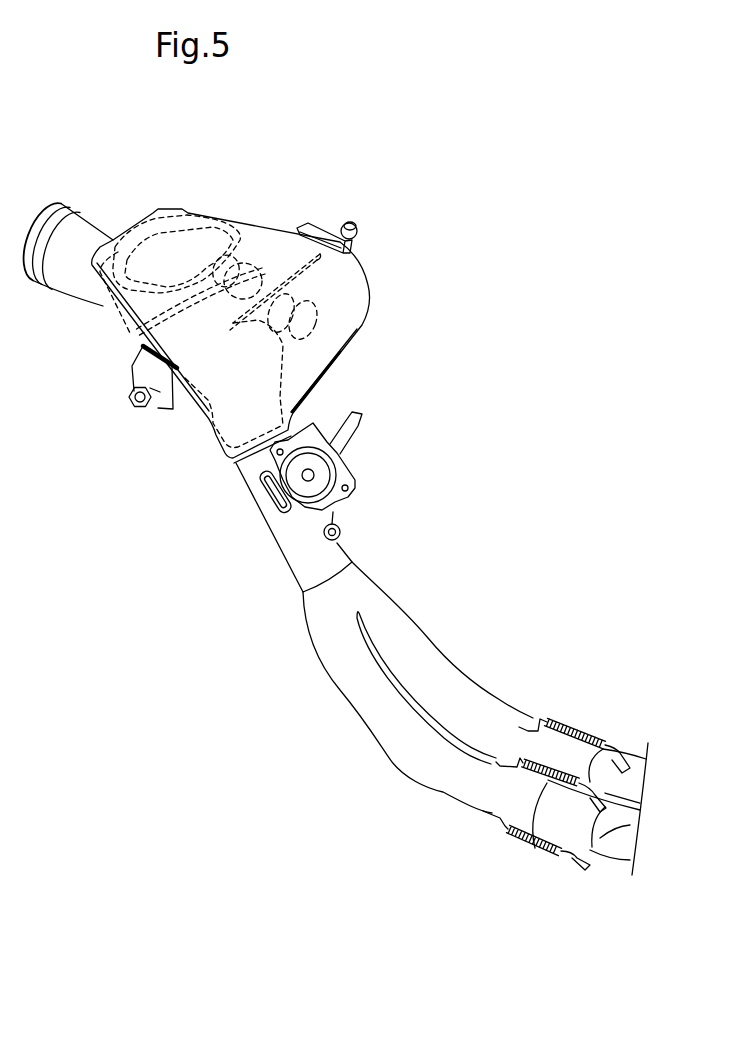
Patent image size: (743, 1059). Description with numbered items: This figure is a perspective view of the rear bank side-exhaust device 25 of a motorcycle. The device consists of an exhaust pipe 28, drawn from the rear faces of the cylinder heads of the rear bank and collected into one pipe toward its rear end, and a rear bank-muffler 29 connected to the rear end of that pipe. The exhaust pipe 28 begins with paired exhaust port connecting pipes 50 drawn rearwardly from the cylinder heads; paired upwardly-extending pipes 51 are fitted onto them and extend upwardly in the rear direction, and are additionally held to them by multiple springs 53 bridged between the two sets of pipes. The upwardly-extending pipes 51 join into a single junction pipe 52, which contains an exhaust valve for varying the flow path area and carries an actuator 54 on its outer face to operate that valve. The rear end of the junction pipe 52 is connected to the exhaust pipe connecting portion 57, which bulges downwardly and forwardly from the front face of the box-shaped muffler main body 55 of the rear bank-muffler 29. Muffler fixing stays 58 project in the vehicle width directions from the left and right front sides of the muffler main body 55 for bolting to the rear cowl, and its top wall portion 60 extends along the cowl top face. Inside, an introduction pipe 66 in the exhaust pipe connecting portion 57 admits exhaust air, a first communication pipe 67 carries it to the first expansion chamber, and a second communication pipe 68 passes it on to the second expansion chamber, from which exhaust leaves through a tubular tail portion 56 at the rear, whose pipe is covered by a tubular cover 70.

The rear bank side-exhaust device 25 is at (243, 576).
The exhaust pipe 28 is at (525, 708).
The rear bank-muffler 29 is at (236, 208).
The exhaust port connecting pipe 50 is at (640, 758).
The upwardly-extending pipe 51 is at (413, 640).
The junction pipe 52 is at (336, 516).
The spring 53 is at (588, 740).
The actuator 54 is at (358, 465).
The muffler main body 55 is at (267, 227).
The tail portion 56 is at (97, 224).
The exhaust pipe connecting portion 57 is at (297, 403).
The muffler fixing stay 58 is at (318, 226).
The top wall portion 60 is at (188, 243).
The introduction pipe 66 is at (287, 362).
The first communication pipe 67 is at (137, 325).
The second communication pipe 68 is at (277, 268).
The tubular cover 70 is at (113, 240).